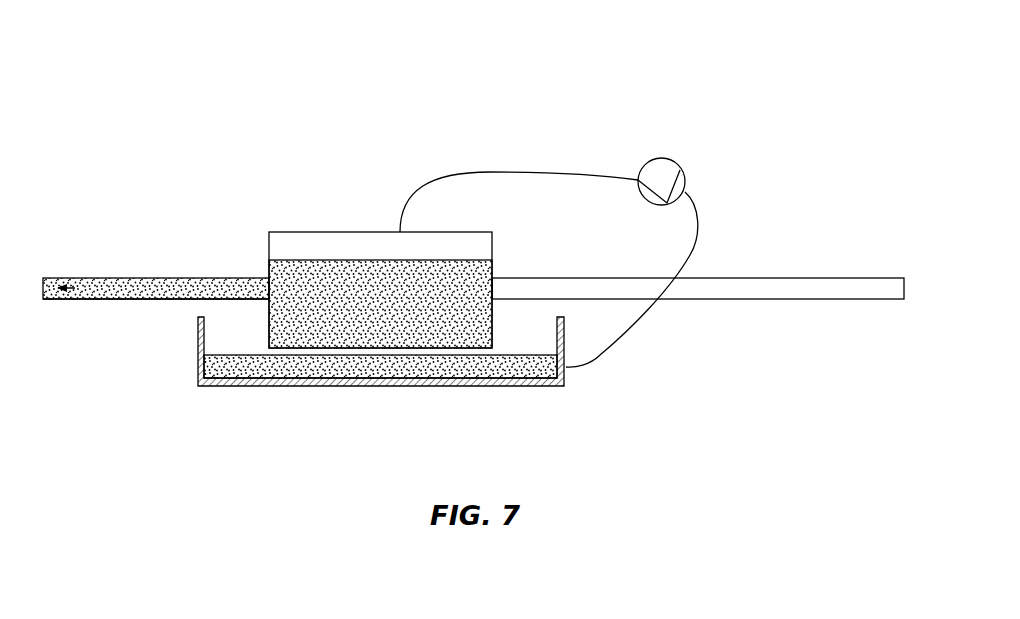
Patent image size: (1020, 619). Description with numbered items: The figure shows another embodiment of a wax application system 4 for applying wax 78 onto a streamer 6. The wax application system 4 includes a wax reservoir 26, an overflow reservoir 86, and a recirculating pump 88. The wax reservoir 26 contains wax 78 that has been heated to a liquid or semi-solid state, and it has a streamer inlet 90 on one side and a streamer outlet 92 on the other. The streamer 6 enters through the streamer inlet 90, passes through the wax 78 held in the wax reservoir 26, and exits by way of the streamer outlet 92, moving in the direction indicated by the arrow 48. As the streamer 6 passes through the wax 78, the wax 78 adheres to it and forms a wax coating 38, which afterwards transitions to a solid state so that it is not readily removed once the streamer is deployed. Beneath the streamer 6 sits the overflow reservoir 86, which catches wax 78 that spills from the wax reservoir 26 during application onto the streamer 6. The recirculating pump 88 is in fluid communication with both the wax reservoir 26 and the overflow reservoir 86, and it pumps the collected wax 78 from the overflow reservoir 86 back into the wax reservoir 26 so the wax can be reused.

The wax application system 4 is at (289, 88).
The streamer 6 is at (817, 278).
The wax reservoir 26 is at (269, 240).
The wax coating 38 is at (117, 300).
The arrow 48 is at (95, 288).
The wax 78 is at (290, 277).
The overflow reservoir 86 is at (197, 338).
The recirculating pump 88 is at (662, 158).
The streamer inlet 90 is at (493, 285).
The streamer outlet 92 is at (268, 290).